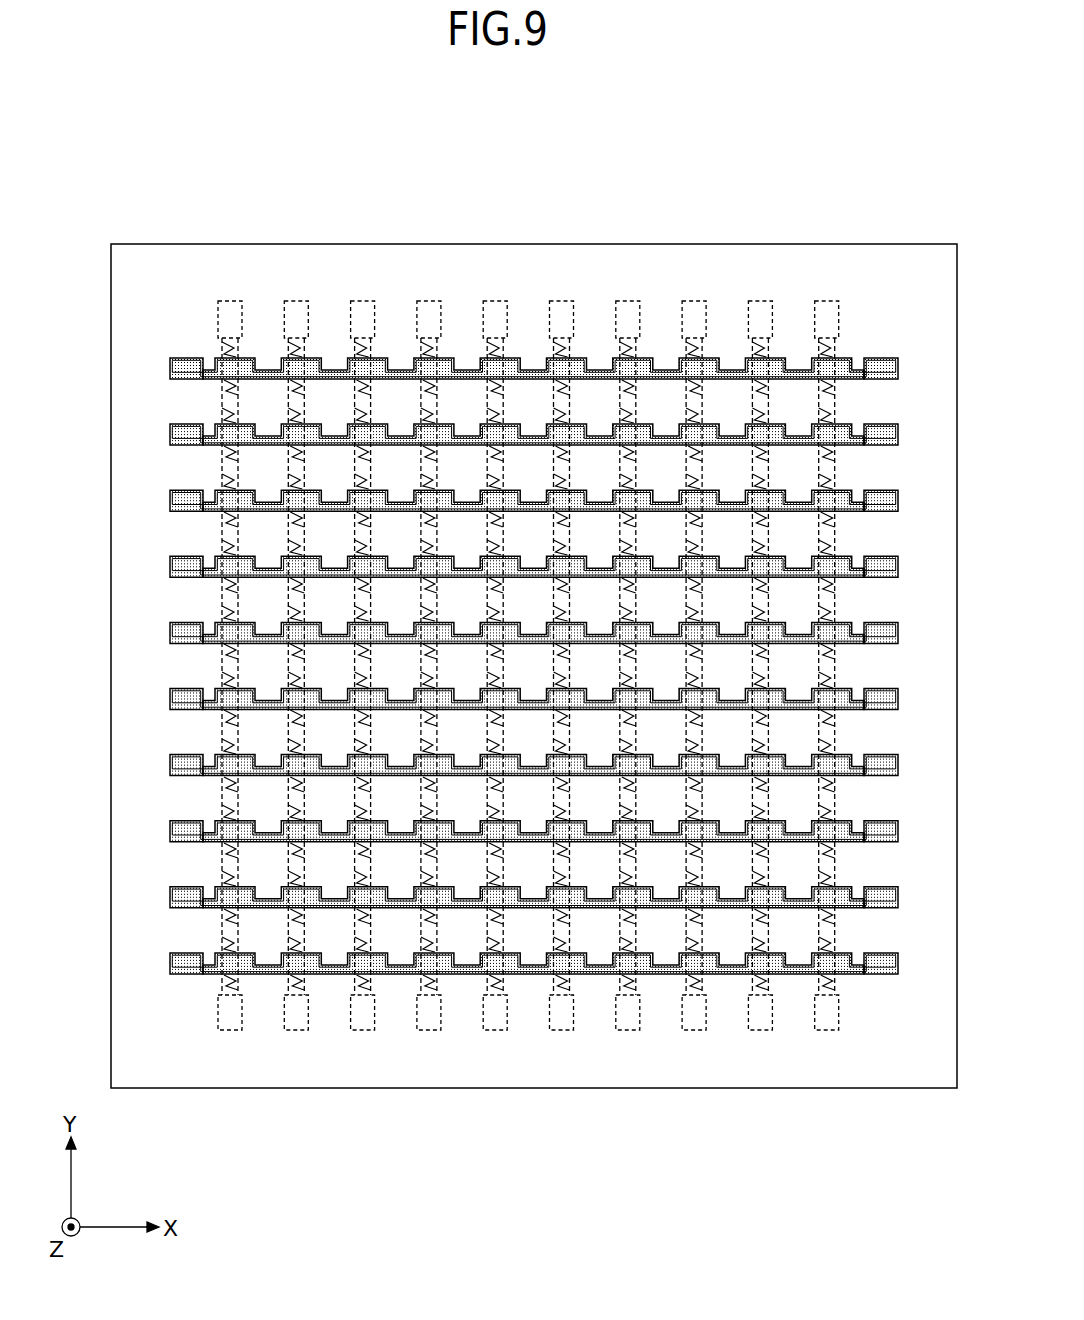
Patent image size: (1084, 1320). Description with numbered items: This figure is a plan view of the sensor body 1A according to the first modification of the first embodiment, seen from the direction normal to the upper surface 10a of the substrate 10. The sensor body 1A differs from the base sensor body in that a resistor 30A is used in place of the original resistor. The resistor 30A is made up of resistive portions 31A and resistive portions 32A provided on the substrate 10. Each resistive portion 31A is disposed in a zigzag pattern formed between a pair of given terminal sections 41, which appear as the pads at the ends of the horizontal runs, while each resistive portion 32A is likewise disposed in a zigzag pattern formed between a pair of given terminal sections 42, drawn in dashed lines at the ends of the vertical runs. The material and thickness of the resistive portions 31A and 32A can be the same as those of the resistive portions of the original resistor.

The sensor body 1A is at (83, 177).
The substrate 10 is at (107, 318).
The upper surface of the substrate 10a is at (135, 1007).
The resistor 30A is at (350, 207).
The resistive portion 31A is at (266, 360).
The resistive portion 32A is at (343, 342).
The terminal section 41 is at (883, 368).
The terminal section 42 is at (762, 300).